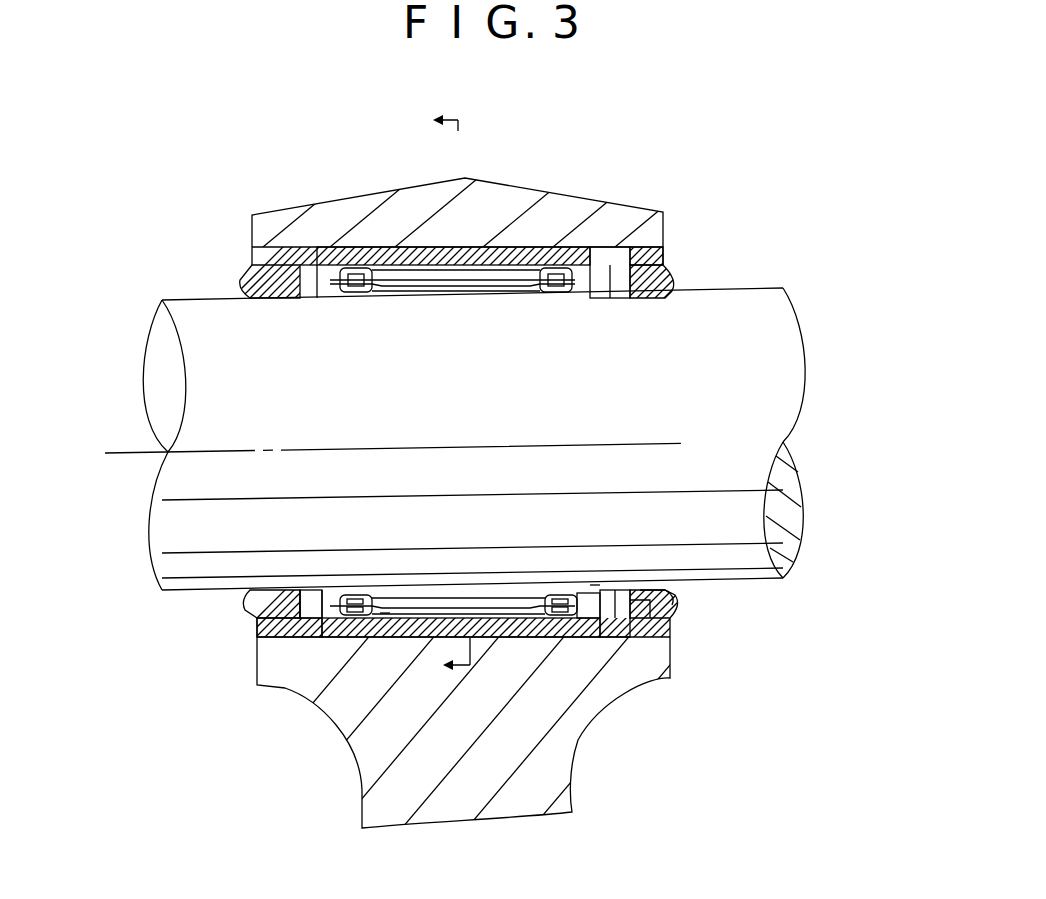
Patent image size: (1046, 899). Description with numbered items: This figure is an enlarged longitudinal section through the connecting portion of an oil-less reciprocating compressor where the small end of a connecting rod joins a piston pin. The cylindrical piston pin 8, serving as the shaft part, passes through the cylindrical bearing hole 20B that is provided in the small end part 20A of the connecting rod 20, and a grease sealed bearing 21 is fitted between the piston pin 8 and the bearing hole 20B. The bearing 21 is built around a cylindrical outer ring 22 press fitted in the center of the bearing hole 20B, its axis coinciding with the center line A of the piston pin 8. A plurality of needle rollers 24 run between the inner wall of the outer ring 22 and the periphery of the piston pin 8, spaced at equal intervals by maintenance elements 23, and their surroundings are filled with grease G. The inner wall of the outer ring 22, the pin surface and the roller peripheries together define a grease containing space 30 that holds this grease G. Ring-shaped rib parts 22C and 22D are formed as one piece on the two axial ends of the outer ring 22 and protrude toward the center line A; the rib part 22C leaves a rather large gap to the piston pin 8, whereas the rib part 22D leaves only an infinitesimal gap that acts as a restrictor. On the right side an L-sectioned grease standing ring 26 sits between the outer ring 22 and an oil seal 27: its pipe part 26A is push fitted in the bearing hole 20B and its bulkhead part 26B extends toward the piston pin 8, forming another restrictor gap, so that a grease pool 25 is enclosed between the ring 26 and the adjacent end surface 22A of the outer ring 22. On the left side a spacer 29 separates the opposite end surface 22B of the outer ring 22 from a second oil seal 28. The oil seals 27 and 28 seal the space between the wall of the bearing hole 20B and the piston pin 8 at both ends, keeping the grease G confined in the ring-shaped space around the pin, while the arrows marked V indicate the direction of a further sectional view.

The piston pin 8 is at (777, 338).
The center line A is at (782, 442).
The connecting rod 20 is at (485, 499).
The small end part 20A is at (484, 210).
The bearing hole 20B is at (373, 247).
The grease sealed bearing 21 is at (488, 455).
The outer ring 22 is at (330, 248).
The bearing end seal 22A is at (585, 258).
The end surface 22B is at (282, 262).
The rib part 22C is at (673, 625).
The rib part 22D is at (265, 625).
The maintenance element 23 is at (493, 280).
The needle roller 24 is at (535, 255).
The grease pool 25 is at (650, 270).
The grease standing ring 26 is at (668, 268).
The pipe part 26A is at (617, 623).
The bulkhead part 26B is at (675, 595).
The oil seal 27 is at (672, 610).
The oil seal 28 is at (268, 603).
The spacer 29 is at (300, 640).
The grease containing space 30 is at (571, 623).
The grease G is at (600, 585).
The section line V is at (440, 397).